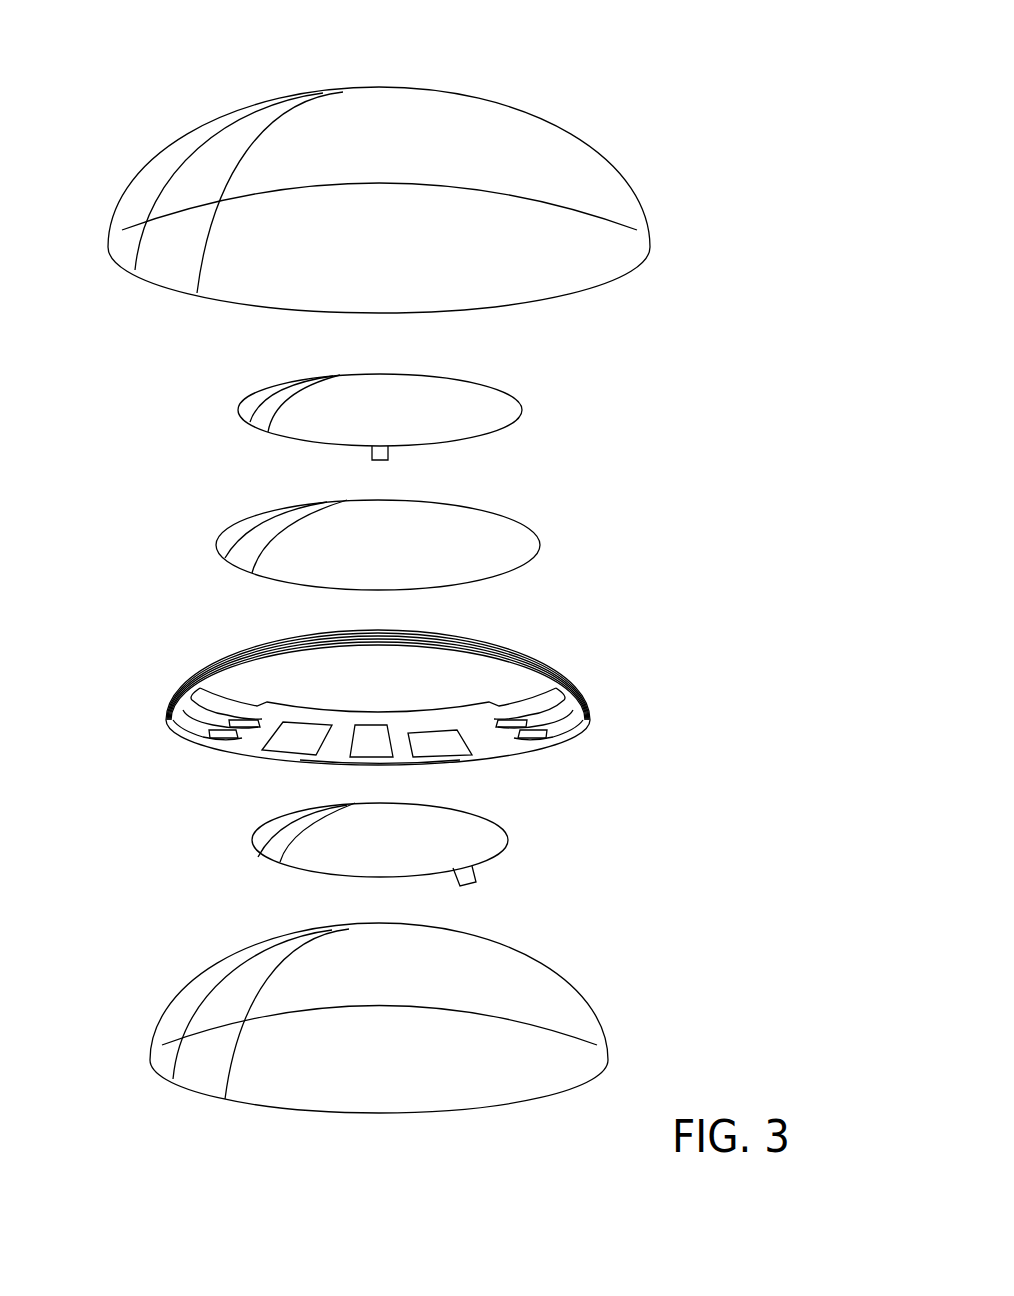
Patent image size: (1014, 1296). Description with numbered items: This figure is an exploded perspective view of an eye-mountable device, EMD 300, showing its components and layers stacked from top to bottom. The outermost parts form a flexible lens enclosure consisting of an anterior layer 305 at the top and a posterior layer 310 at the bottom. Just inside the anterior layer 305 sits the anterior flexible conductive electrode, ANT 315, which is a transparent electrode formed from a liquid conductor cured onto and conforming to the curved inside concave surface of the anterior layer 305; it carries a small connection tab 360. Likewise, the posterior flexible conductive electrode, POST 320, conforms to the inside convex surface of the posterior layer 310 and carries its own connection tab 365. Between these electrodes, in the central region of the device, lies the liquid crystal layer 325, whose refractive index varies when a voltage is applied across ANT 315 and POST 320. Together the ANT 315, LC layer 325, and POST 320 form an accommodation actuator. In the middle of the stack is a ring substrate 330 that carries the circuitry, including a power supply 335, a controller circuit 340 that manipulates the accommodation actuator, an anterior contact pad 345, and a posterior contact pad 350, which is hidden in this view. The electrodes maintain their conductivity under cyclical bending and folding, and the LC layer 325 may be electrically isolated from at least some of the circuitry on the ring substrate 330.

The EMD 300 is at (66, 73).
The anterior layer 305 is at (533, 121).
The posterior layer 310 is at (560, 980).
The anterior flexible conductive electrode (ANT) 315 is at (513, 398).
The posterior flexible conductive electrode (POST) 320 is at (264, 857).
The liquid crystal layer 325 is at (445, 557).
The ring substrate 330 is at (572, 661).
The power supply 335 is at (287, 740).
The controller circuit 340 is at (368, 733).
The anterior contact pad 345 is at (423, 740).
The posterior contact pad 350 is at (418, 775).
The connection tab 360 is at (389, 456).
The connection tab 365 is at (476, 882).